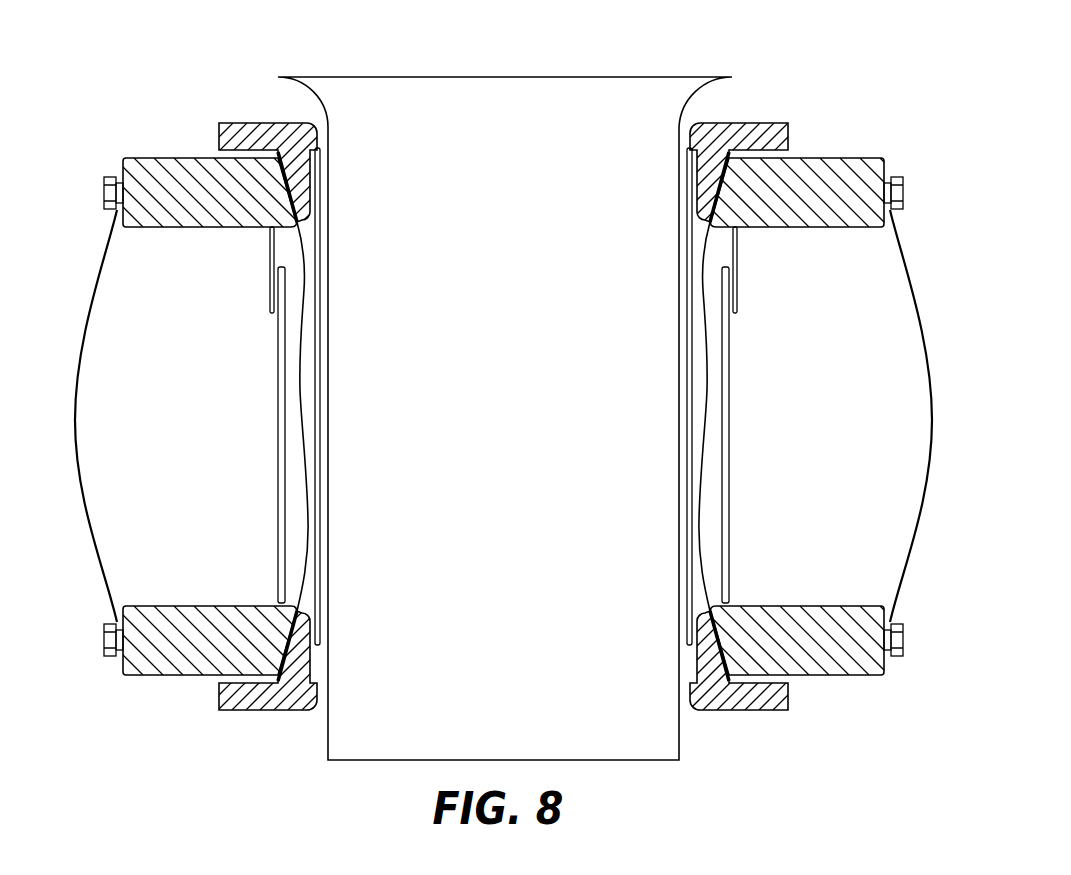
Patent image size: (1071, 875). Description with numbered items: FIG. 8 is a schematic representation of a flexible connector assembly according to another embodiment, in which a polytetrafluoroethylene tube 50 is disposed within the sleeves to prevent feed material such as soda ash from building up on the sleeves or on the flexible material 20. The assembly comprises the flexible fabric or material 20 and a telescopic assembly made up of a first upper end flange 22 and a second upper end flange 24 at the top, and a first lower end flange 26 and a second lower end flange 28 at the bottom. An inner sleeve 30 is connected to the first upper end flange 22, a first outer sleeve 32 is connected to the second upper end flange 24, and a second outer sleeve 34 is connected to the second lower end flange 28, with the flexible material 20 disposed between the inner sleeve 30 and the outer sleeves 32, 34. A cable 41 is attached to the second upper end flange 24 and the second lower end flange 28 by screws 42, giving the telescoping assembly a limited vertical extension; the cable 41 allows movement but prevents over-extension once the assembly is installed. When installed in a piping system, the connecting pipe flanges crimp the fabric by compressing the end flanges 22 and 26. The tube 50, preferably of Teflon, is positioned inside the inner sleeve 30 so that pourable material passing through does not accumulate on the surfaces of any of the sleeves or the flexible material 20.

The flexible material 20 is at (304, 360).
The first upper end flange 22 is at (265, 123).
The second upper end flange 24 is at (177, 158).
The first lower end flange 26 is at (265, 711).
The second lower end flange 28 is at (160, 676).
The inner sleeve 30 is at (328, 333).
The first outer sleeve 32 is at (270, 270).
The second outer sleeve 34 is at (278, 517).
The cable 41 is at (78, 418).
The screws 42 is at (104, 189).
The tube 50 is at (498, 77).